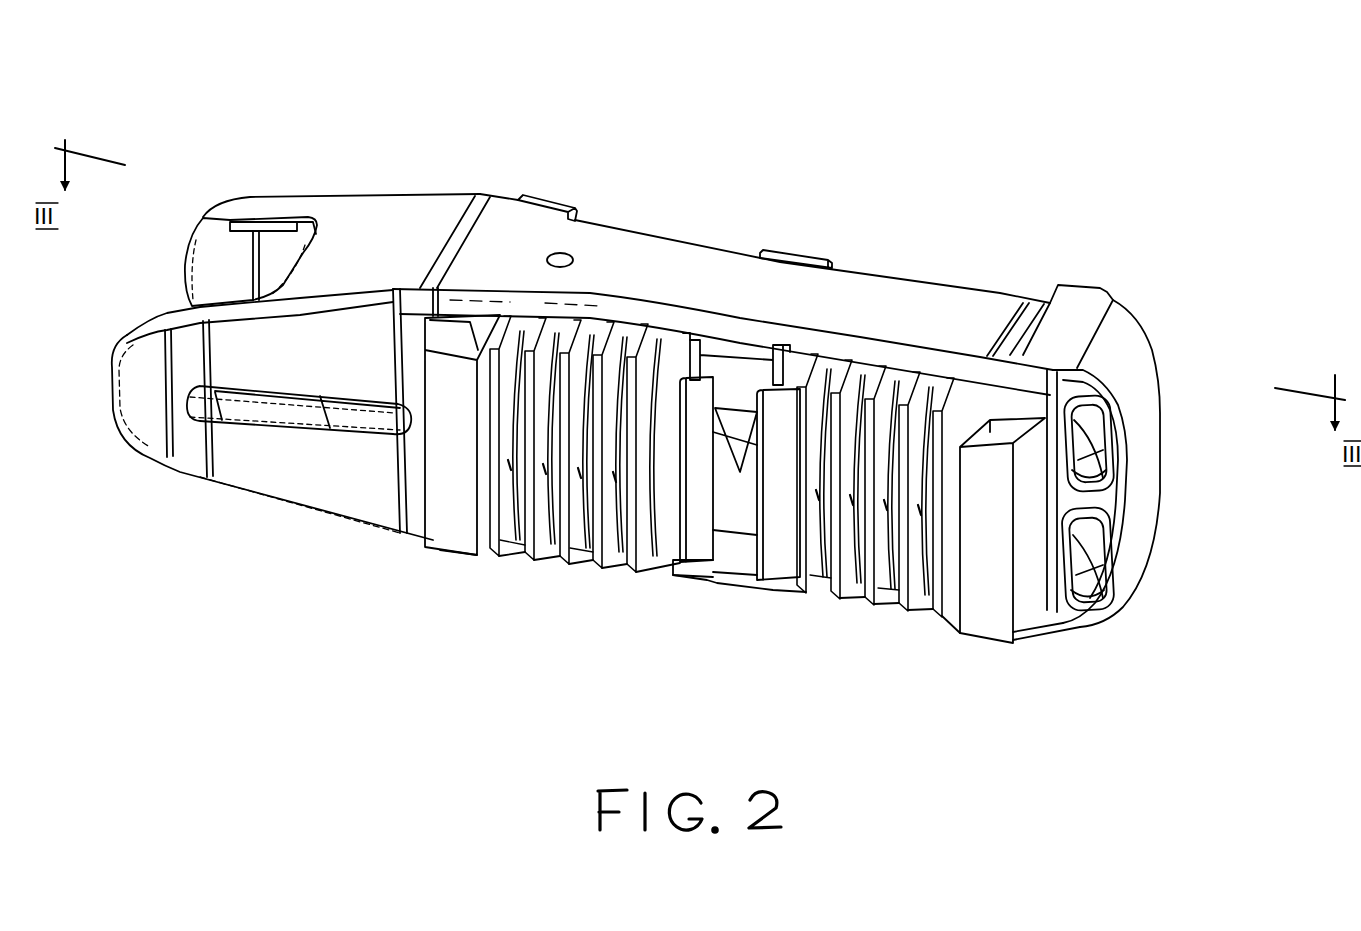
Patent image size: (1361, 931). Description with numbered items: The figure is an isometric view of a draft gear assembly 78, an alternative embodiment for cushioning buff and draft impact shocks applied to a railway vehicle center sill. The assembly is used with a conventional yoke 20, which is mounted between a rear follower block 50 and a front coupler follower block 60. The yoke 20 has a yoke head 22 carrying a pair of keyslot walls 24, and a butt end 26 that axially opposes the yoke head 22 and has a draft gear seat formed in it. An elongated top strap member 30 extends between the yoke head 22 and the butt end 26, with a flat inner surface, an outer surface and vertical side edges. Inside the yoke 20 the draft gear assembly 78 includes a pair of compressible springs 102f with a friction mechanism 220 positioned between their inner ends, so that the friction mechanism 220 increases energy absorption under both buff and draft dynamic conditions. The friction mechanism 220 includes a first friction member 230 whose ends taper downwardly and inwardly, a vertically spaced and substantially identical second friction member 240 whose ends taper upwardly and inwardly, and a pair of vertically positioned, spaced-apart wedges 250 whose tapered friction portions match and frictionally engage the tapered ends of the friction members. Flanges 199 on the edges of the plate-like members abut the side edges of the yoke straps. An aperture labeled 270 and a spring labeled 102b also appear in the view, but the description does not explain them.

The draft gear assembly 78 is at (976, 138).
The yoke head 22 is at (378, 245).
The keyslot walls 24 is at (130, 336).
The yoke 20 is at (590, 218).
The front coupler follower block 60 is at (531, 190).
The aperture 270 is at (574, 262).
The first friction member 230 is at (735, 320).
The top strap member 30 is at (888, 305).
The rear follower block 50 is at (1094, 280).
The butt end 26 is at (1157, 434).
The left end plate 102b is at (537, 573).
The compressible springs 102f is at (921, 642).
The flanges 199 is at (905, 605).
The wedges 250 is at (687, 535).
The second friction member 240 is at (727, 573).
The friction mechanism 220 is at (722, 640).